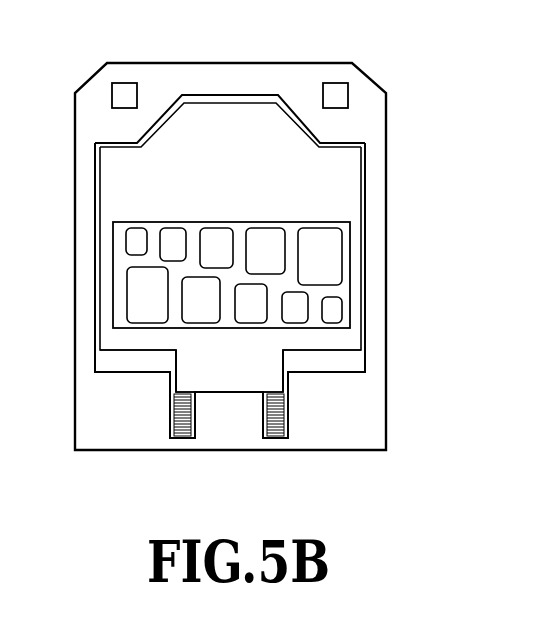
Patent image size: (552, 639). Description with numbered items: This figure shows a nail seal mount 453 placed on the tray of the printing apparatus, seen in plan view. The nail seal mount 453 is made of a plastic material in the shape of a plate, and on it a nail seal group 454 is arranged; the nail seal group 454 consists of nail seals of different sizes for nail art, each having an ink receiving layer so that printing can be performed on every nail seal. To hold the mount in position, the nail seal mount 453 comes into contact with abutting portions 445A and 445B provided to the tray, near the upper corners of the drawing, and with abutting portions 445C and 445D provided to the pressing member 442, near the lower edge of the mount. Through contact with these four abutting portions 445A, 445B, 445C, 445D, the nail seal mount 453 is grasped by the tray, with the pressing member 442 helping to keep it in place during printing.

The pressing member 442 is at (230, 383).
The abutting portion 445A is at (116, 143).
The abutting portion 445B is at (340, 143).
The abutting portion 445C is at (197, 349).
The abutting portion 445D is at (275, 347).
The nail seal mount 453 is at (231, 125).
The nail seal group 454 is at (292, 232).